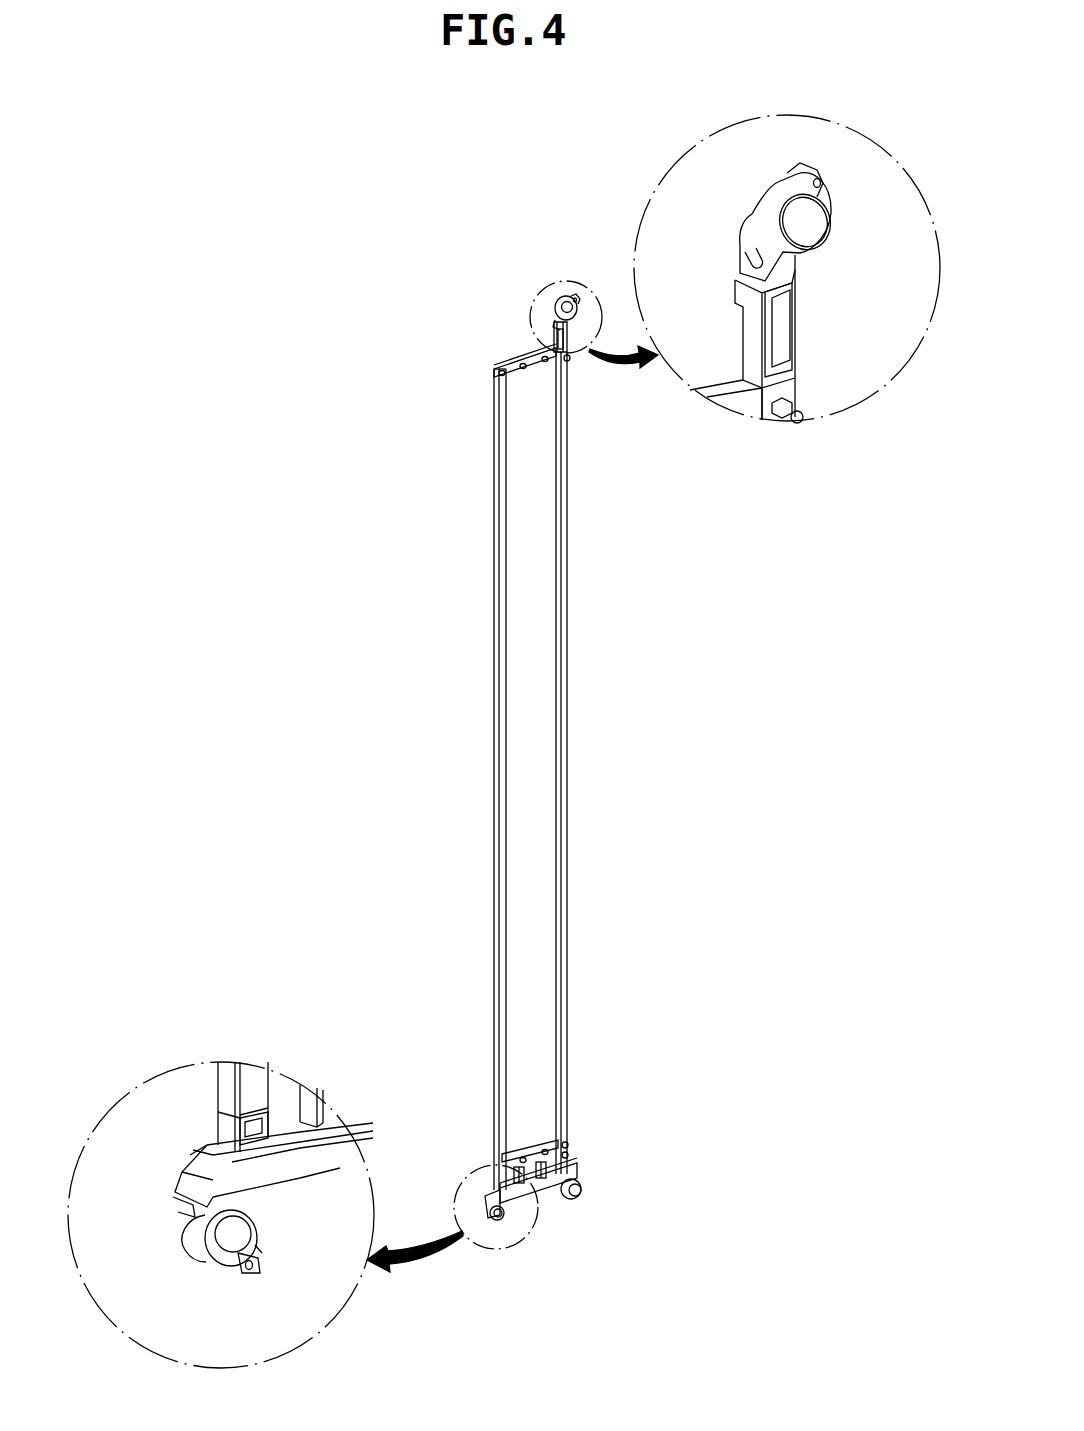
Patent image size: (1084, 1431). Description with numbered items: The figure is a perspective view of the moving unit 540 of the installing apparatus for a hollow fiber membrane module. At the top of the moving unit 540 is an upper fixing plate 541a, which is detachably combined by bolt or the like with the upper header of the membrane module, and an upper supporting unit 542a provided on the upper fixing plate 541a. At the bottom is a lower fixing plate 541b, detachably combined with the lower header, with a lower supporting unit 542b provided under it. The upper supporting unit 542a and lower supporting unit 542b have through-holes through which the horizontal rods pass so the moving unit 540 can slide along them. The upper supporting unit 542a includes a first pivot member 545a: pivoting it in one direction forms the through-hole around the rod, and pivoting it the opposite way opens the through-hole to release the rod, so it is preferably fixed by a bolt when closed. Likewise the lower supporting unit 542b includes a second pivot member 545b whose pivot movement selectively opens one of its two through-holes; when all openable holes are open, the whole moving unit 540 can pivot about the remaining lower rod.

The moving unit 540 is at (430, 700).
The upper fixing plate 541a is at (518, 362).
The lower fixing plate 541b is at (548, 1137).
The upper supporting unit 542a is at (540, 307).
The lower supporting unit 542b is at (523, 1200).
The first pivot member 545a is at (763, 213).
The second pivot member 545b is at (197, 1247).